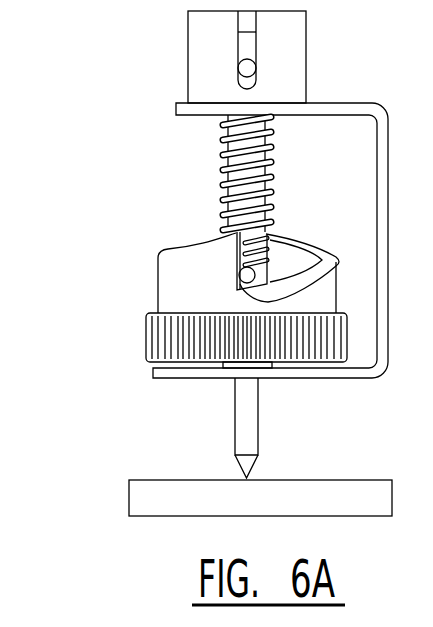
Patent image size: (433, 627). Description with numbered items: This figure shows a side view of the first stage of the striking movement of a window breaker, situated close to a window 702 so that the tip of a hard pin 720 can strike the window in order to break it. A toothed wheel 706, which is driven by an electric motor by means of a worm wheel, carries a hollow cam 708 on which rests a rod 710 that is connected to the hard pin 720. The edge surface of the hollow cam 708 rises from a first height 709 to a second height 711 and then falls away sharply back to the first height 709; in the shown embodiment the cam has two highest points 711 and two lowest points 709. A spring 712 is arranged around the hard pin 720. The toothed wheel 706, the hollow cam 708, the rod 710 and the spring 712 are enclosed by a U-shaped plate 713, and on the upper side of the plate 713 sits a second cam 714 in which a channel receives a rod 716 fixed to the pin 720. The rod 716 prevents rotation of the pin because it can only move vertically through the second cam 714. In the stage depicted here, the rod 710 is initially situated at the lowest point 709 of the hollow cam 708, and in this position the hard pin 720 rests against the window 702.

The window 702 is at (155, 492).
The toothed wheel 706 is at (163, 340).
The hollow cam 708 is at (193, 253).
The first height 709 is at (255, 280).
The rod 710 is at (239, 274).
The second height 711 is at (273, 217).
The spring 712 is at (221, 172).
The U-shaped plate 713 is at (387, 317).
The second cam 714 is at (202, 37).
The rod 716 is at (240, 67).
The hard pin 720 is at (247, 43).